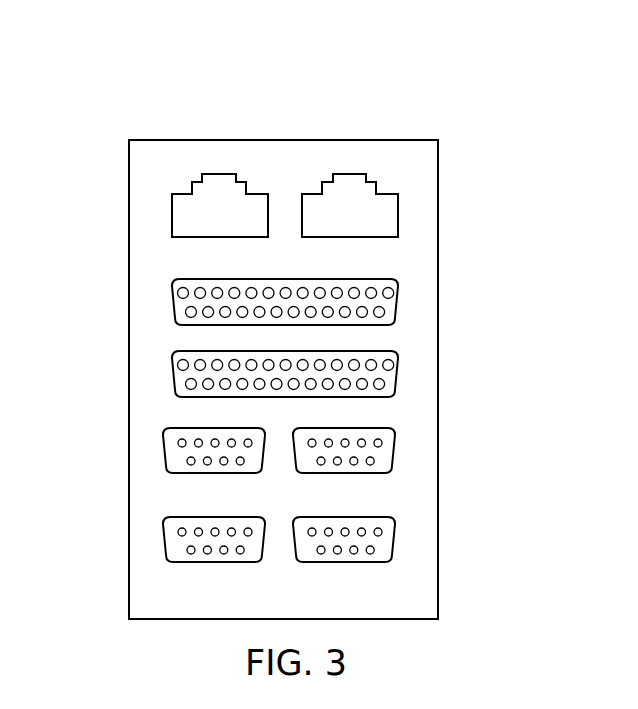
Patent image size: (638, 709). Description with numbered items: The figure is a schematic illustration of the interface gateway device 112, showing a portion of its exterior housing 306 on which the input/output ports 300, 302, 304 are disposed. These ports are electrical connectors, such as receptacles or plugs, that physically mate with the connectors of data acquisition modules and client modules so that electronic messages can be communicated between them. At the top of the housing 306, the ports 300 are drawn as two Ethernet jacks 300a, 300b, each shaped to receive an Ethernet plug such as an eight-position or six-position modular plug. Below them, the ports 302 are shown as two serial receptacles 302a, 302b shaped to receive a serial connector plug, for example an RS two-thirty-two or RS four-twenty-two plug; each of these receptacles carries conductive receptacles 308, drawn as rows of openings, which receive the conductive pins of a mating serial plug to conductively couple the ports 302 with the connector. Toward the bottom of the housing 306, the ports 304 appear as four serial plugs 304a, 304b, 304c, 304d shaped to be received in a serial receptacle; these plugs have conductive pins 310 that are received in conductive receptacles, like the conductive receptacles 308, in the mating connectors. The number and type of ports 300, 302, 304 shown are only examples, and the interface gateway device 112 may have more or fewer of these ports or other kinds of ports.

The interface gateway device 112 is at (462, 96).
The input/output ports 300 is at (341, 169).
The Ethernet jack 300a is at (222, 173).
The Ethernet jack 300b is at (352, 173).
The input/output ports 302 is at (283, 325).
The serial receptacle 302a is at (283, 289).
The serial receptacle 302b is at (173, 383).
The input/output ports 304 is at (280, 485).
The serial plug 304a is at (163, 455).
The serial plug 304b is at (399, 441).
The serial plug 304c is at (163, 545).
The serial plug 304d is at (397, 547).
The exterior housing 306 is at (292, 152).
The conductive receptacles 308 is at (392, 290).
The conductive pins 310 is at (382, 443).